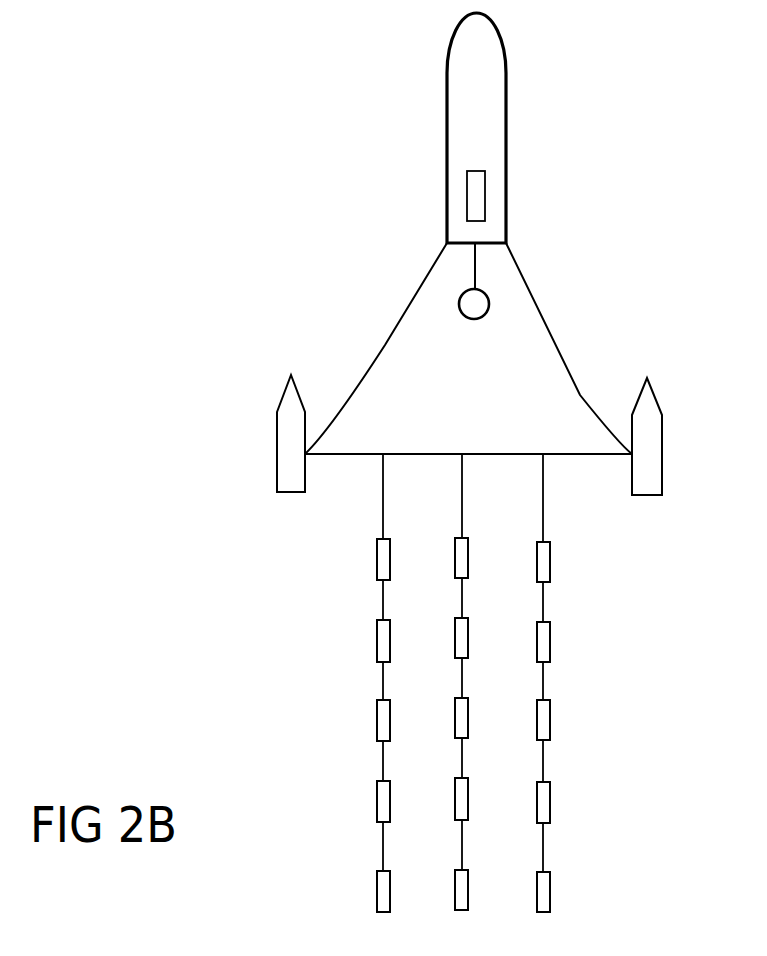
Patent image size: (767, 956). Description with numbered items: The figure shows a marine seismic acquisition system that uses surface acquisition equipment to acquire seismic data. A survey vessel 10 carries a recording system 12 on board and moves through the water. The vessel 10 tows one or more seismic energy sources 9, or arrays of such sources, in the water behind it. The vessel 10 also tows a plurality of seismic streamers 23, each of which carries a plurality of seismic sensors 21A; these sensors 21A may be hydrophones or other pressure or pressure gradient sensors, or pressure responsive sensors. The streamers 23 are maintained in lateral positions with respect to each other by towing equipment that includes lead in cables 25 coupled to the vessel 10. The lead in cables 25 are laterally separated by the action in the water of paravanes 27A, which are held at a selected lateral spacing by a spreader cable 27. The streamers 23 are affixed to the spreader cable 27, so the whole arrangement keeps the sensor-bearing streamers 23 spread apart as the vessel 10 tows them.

The survey vessel 10 is at (506, 110).
The recording system 12 is at (487, 212).
The seismic energy source 9 is at (471, 320).
The lead in cable 25 is at (402, 318).
The spreader cable 27 is at (488, 455).
The paravane 27A is at (276, 452).
The seismic streamer 23 is at (553, 495).
The seismic sensor 21A is at (377, 557).